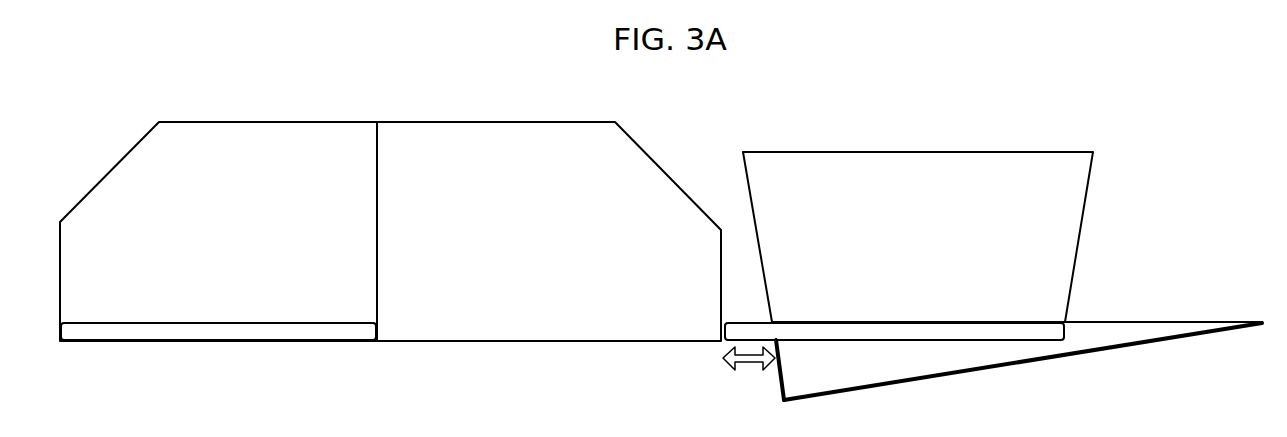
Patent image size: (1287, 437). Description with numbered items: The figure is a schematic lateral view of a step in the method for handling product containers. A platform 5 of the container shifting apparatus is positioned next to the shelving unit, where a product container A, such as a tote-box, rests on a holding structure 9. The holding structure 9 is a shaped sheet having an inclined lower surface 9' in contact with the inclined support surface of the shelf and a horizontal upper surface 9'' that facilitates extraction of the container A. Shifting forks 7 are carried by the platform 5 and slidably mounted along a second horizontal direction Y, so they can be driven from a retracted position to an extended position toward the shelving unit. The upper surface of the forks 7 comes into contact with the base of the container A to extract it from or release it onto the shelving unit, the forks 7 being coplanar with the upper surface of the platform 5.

The platform 5 is at (442, 341).
The shifting forks 7 is at (192, 328).
The product container A is at (1037, 184).
The holding structure 9 is at (1019, 344).
The lower surface 9' is at (1023, 370).
The horizontal upper surface 9'' is at (1163, 292).
The second horizontal direction Y is at (748, 367).